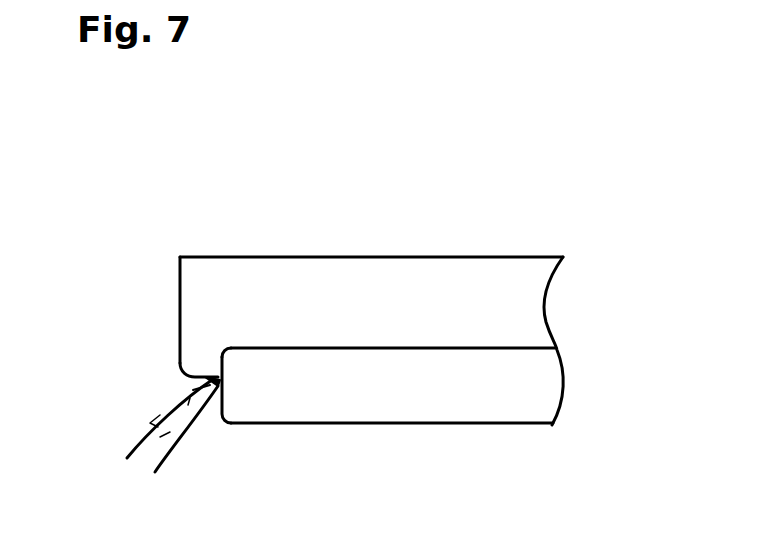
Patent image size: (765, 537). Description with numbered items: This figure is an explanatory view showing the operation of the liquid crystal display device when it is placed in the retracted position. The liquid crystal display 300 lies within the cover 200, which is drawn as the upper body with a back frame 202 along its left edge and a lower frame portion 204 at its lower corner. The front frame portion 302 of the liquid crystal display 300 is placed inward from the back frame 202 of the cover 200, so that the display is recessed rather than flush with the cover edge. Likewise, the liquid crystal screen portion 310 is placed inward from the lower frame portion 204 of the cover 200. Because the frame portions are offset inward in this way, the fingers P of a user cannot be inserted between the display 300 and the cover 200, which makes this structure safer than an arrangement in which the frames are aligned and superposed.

The cover 200 is at (412, 273).
The back frame 202 is at (177, 315).
The lower frame portion 204 is at (197, 383).
The liquid crystal display 300 is at (415, 407).
The front frame portion 302 is at (217, 400).
The liquid crystal screen portion 310 is at (507, 348).
The fingers P is at (157, 427).